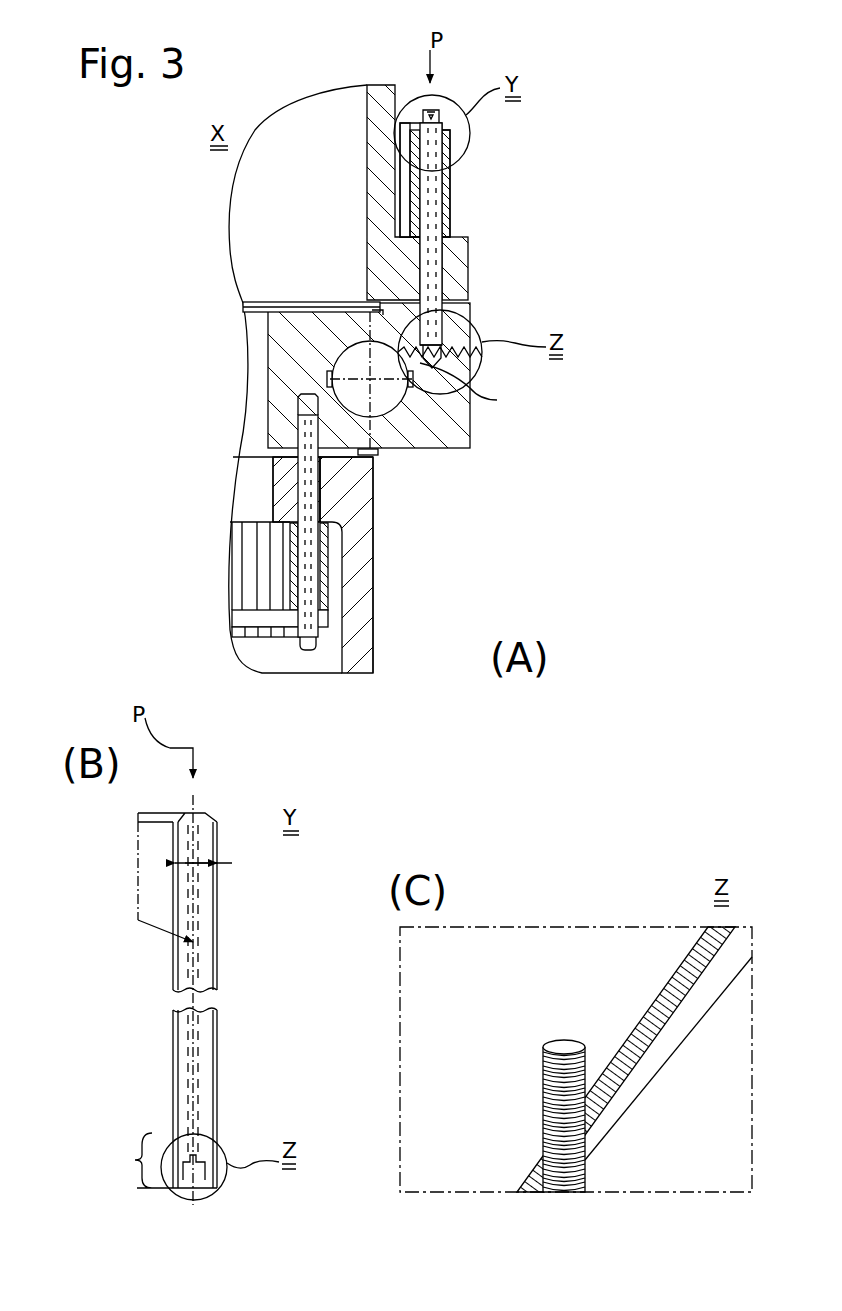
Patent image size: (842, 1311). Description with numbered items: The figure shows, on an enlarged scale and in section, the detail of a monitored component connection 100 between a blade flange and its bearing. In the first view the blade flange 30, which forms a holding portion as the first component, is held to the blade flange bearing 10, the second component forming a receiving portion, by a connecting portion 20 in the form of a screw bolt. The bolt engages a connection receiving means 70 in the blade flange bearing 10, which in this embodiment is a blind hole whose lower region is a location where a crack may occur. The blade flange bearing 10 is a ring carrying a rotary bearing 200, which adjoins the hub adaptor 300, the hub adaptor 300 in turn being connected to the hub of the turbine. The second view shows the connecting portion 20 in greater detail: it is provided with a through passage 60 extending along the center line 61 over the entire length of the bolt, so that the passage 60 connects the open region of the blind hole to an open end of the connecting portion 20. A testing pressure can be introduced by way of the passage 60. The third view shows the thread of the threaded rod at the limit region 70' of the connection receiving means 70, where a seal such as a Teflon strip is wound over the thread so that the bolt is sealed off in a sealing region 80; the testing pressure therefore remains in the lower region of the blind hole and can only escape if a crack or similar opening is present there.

The component connection 100 is at (607, 132).
The connecting portion 20 is at (437, 205).
The blade flange 30 is at (458, 255).
The connection receiving means 70 is at (473, 389).
The blade flange bearing 10 is at (470, 440).
The rotary bearing 200 is at (382, 405).
The hub adaptor 300 is at (368, 585).
The center line 61 is at (197, 800).
The through passage 60 is at (200, 853).
The limit region 70' is at (226, 1145).
The sealing region 80 is at (137, 1160).